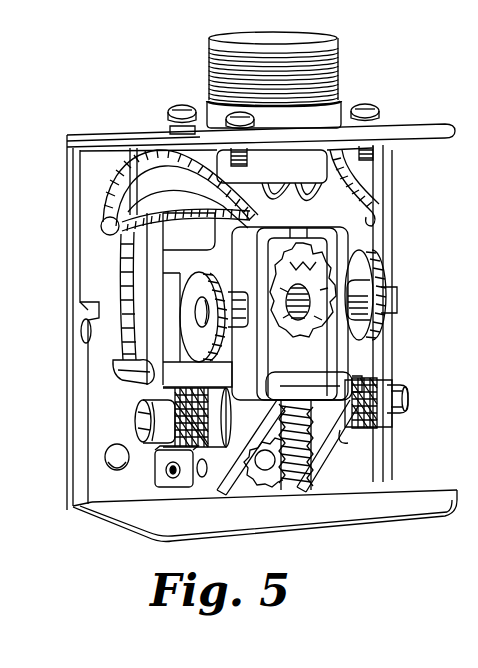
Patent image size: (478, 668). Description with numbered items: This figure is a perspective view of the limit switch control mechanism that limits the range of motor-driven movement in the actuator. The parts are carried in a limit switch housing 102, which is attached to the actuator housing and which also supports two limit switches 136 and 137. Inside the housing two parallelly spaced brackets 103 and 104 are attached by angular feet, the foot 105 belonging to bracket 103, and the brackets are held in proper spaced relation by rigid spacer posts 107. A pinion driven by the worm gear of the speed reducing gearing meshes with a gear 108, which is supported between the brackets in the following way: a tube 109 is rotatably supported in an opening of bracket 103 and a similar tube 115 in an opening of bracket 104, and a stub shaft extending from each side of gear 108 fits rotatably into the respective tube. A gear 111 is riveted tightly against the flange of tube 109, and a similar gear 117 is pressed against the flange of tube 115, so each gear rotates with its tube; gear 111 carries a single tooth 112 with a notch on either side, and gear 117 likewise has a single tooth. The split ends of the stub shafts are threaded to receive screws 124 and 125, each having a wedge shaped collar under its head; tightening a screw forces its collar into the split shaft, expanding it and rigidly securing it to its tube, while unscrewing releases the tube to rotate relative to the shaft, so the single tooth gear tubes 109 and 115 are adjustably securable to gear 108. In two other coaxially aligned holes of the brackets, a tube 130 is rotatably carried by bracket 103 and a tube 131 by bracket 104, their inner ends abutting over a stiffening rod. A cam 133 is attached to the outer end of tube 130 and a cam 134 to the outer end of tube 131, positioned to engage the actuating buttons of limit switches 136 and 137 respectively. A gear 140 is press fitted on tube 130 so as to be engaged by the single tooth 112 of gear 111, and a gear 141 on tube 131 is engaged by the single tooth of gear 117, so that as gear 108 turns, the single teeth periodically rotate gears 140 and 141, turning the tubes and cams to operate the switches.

The limit switch housing 102 is at (68, 190).
The bracket 103 is at (235, 243).
The bracket 104 is at (338, 247).
The angular foot 105 is at (203, 478).
The spacer post 107 is at (334, 381).
The gear 108 is at (282, 486).
The tube 109 is at (218, 449).
The gear 111 is at (263, 437).
The single tooth 112 is at (271, 480).
The tube 115 is at (379, 428).
The gear 117 is at (323, 447).
The screw 124 is at (137, 414).
The screw 125 is at (409, 402).
The tube 130 is at (236, 296).
The tube 131 is at (372, 303).
The cam 133 is at (197, 348).
The cam 134 is at (365, 272).
The limit switch 136 is at (180, 285).
The limit switch 137 is at (330, 211).
The gear 140 is at (276, 330).
The gear 141 is at (362, 355).